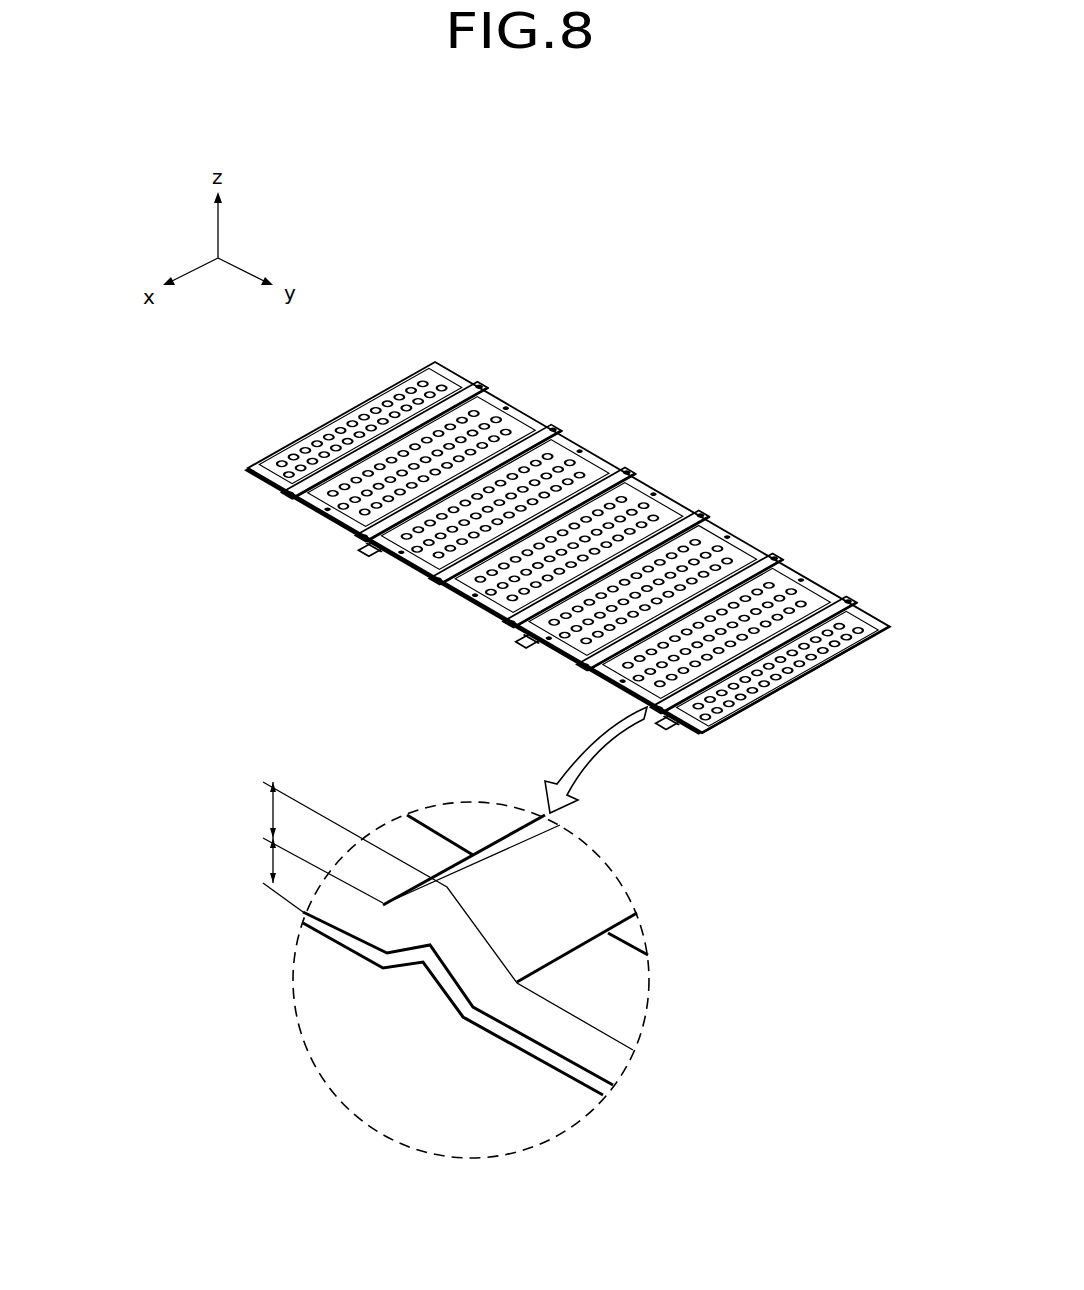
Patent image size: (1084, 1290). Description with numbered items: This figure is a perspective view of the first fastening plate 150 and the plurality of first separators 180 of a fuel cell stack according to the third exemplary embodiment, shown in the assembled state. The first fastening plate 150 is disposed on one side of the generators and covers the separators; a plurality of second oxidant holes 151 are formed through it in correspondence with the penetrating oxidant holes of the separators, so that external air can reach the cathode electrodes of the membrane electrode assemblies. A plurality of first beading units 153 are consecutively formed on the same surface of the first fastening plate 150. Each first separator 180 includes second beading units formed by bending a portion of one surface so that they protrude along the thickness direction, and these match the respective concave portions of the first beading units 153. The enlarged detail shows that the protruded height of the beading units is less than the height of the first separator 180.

The first fastening plate 150 is at (558, 784).
The second oxidant holes 151 is at (512, 414).
The first beading unit 153 is at (623, 467).
The first separator 180 is at (533, 640).